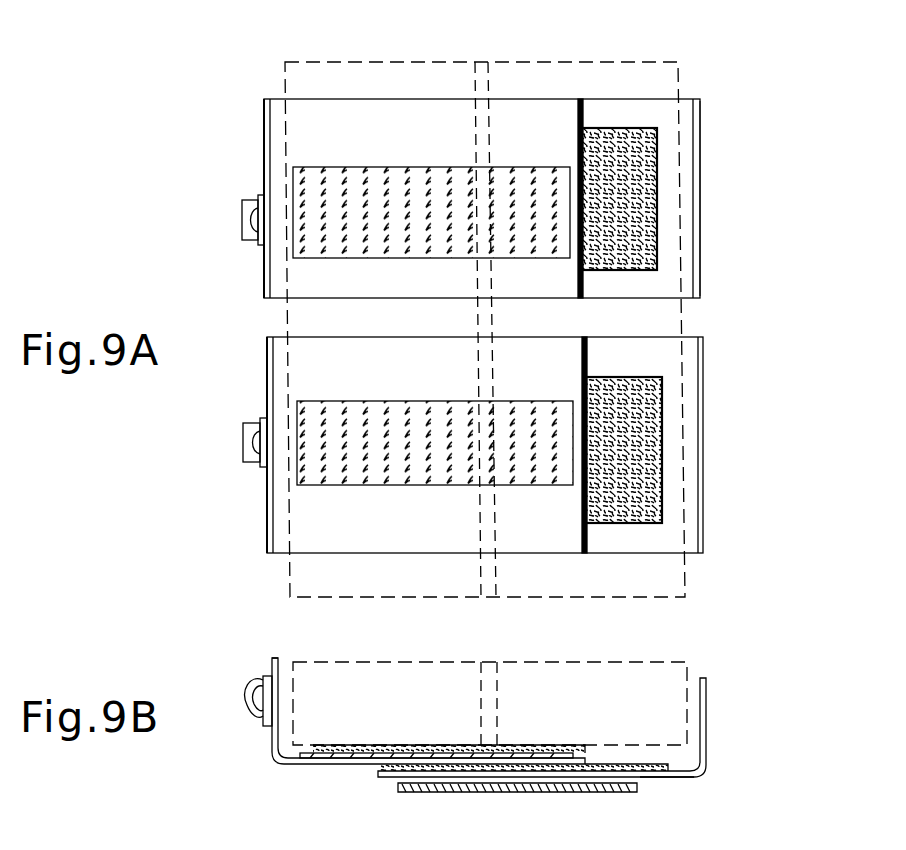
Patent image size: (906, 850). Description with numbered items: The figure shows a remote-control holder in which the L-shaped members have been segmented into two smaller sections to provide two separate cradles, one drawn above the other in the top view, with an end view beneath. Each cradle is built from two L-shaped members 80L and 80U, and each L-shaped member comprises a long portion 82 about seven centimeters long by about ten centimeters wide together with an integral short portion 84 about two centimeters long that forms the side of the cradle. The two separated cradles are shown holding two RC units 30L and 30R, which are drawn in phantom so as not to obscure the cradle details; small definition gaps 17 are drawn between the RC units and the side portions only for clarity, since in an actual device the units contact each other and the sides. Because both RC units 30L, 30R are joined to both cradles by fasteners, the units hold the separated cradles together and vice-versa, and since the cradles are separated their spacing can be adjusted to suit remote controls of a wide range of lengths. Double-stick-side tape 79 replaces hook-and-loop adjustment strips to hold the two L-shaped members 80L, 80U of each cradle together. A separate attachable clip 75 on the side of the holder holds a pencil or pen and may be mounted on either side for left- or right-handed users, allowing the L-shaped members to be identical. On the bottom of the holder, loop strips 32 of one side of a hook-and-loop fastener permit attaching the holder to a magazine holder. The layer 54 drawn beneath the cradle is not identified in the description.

In FIG. 9A, the definition gaps 17 is at (283, 60).
In FIG. 9B, the definition gaps 17 is at (286, 662).
In FIG. 9A, the RC unit 30L is at (316, 72).
In FIG. 9A, the RC unit 30R is at (586, 72).
In FIG. 9B, the loop strips 32 is at (585, 792).
In FIG. 9A, the thermal pad 54 is at (383, 175).
In FIG. 9B, the thermal pad 54 is at (530, 760).
In FIG. 9A, the clips 75 is at (240, 218).
In FIG. 9B, the clips 75 is at (258, 688).
In FIG. 9A, the double-stick-side tape 79 is at (612, 135).
In FIG. 9B, the double-stick-side tape 79 is at (380, 767).
In FIG. 9A, the L-shaped member 80U is at (258, 149).
In FIG. 9B, the L-shaped member 80U is at (260, 745).
In FIG. 9A, the L-shaped member 80L is at (712, 144).
In FIG. 9B, the L-shaped member 80L is at (712, 718).
In FIG. 9A, the long portion 82 is at (660, 112).
In FIG. 9B, the long portion 82 is at (676, 778).
In FIG. 9A, the short portion 84 is at (703, 246).
In FIG. 9B, the short portion 84 is at (268, 662).